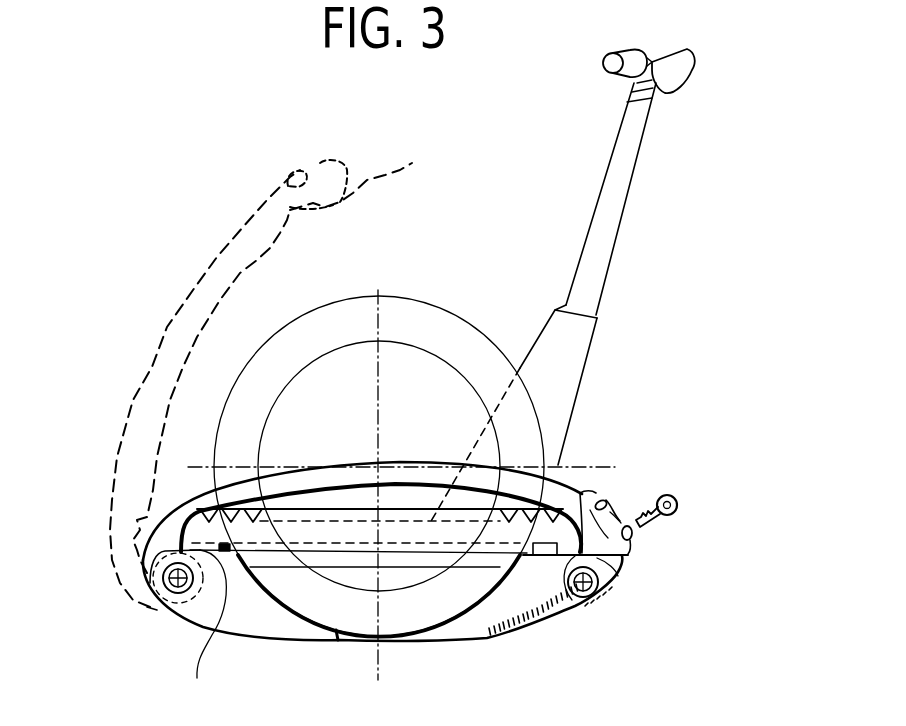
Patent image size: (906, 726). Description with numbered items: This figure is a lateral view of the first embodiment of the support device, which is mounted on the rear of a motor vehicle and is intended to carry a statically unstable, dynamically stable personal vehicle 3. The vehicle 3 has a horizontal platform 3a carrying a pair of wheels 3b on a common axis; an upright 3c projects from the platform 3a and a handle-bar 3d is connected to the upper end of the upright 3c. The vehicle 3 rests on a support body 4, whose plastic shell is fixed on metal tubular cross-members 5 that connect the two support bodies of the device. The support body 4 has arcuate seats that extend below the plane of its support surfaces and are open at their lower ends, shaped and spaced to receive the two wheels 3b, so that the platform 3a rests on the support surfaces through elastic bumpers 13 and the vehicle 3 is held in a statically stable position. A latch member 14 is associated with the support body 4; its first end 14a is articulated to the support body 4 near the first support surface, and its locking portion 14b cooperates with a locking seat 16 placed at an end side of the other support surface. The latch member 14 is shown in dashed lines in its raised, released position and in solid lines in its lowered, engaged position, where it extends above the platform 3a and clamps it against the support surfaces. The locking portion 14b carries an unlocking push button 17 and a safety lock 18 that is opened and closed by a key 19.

The personal vehicle 3 is at (633, 237).
The horizontal platform 3a is at (347, 540).
The wheels 3b is at (427, 298).
The upright 3c is at (578, 338).
The handle-bar 3d is at (665, 50).
The support body 4 is at (258, 639).
The tubular cross-members 5 is at (172, 583).
The bumpers 13 is at (523, 556).
The latch member 14 is at (192, 292).
The first end 14a is at (145, 526).
The locking portion 14b is at (580, 468).
The locking seat 16 is at (628, 563).
The unlocking push button 17 is at (597, 500).
The safety lock 18 is at (634, 544).
The key 19 is at (677, 512).